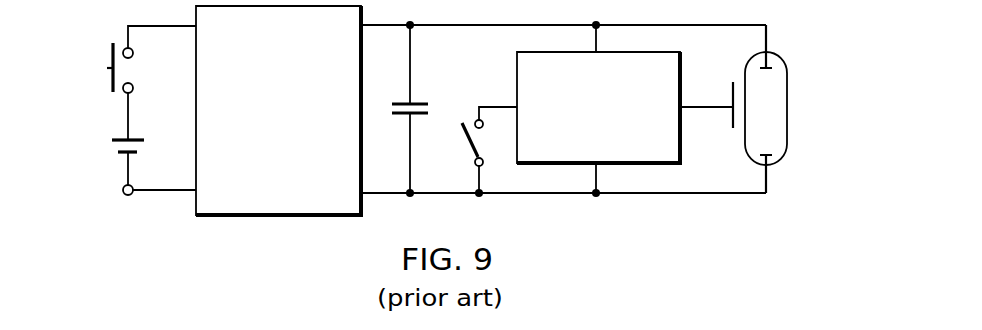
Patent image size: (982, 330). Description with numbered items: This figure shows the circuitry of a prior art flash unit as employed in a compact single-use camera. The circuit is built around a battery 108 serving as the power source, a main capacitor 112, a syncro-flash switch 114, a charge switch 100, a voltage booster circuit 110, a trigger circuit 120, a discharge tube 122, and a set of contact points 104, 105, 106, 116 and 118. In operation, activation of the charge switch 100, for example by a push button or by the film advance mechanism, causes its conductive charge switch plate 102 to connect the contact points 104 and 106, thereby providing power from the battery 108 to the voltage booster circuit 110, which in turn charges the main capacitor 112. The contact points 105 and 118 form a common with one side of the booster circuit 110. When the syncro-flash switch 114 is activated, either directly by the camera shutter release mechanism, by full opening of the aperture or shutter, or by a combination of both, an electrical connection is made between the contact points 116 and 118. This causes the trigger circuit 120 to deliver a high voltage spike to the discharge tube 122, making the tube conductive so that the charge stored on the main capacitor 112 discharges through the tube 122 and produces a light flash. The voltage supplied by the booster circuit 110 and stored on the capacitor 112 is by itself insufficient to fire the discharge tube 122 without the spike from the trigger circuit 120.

The charge switch 100 is at (101, 53).
The conductive charge switch plate 102 is at (107, 85).
The contact point 104 is at (133, 53).
The contact point 105 is at (125, 197).
The contact point 106 is at (131, 92).
The battery 108 is at (122, 157).
The voltage booster circuit 110 is at (362, 137).
The main capacitor 112 is at (432, 107).
The syncro-flash switch 114 is at (467, 143).
The contact point 116 is at (476, 119).
The contact point 118 is at (483, 160).
The trigger circuit 120 is at (682, 133).
The discharge tube 122 is at (777, 53).